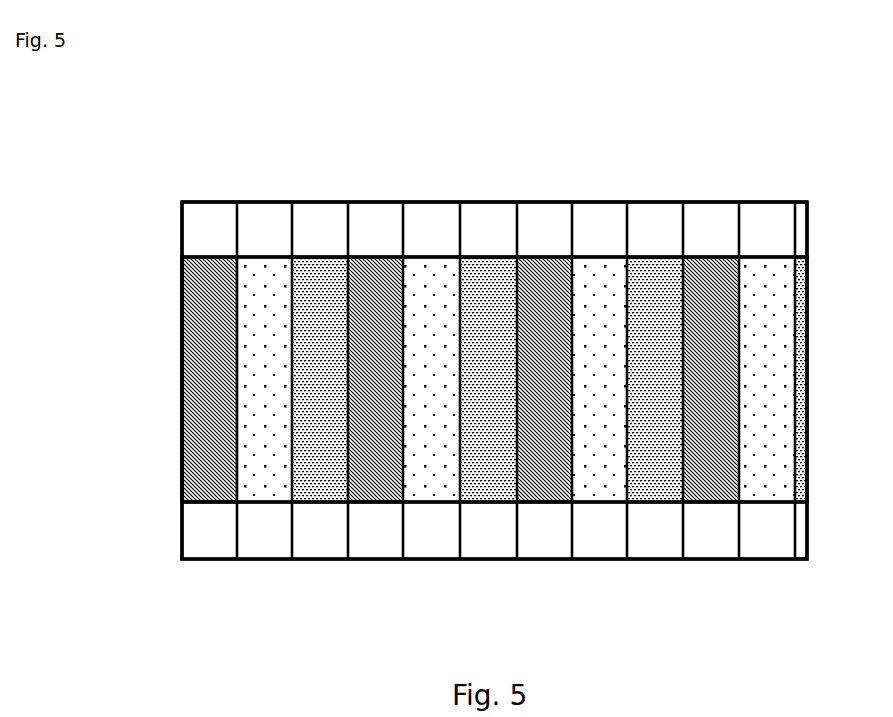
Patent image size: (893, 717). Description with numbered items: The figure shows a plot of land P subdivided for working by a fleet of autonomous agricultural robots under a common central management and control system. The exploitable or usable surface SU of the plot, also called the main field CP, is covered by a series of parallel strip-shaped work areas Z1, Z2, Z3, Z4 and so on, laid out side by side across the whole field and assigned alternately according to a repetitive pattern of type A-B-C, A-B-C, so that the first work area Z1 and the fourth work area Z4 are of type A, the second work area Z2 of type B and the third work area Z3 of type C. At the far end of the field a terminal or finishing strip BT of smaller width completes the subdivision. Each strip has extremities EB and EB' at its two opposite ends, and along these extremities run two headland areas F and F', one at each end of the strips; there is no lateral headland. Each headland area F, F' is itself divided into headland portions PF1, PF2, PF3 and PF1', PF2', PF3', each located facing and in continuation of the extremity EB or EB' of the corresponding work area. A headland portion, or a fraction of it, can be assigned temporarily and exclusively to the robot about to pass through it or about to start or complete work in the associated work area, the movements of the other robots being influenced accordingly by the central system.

The headland area F is at (499, 174).
The headland area F' is at (496, 581).
The headland portion PF1 is at (208, 200).
The headland portion PF2 is at (264, 200).
The headland portion PF3 is at (317, 200).
The strip extremity EB is at (430, 200).
The headland portion PF1' is at (209, 562).
The headland portion PF2' is at (264, 562).
The headland portion PF3' is at (320, 562).
The strip extremity EB' is at (432, 562).
The work area Z1 is at (182, 350).
The work area Z2 is at (260, 392).
The work area Z3 is at (310, 432).
The work area Z4 is at (360, 440).
The terminal strip BT is at (808, 432).
The main field CP is at (713, 505).
The usable surface SU is at (732, 604).
The plot of land P is at (637, 632).